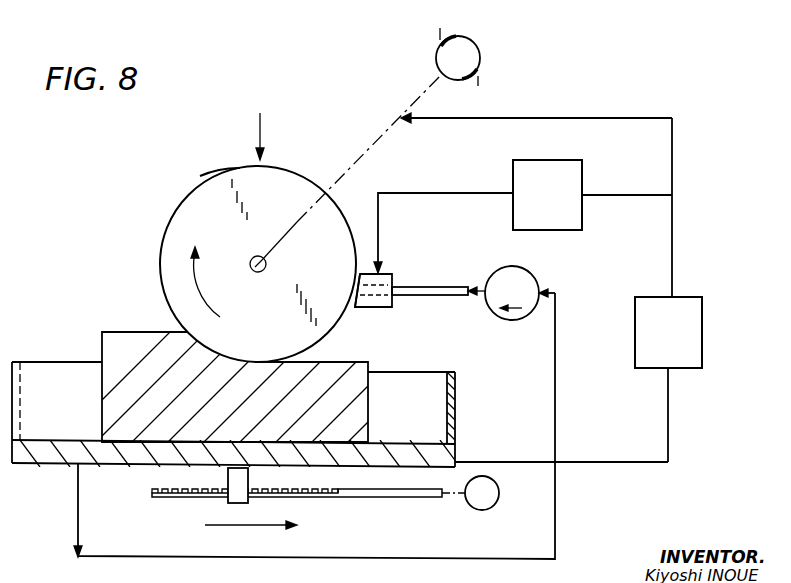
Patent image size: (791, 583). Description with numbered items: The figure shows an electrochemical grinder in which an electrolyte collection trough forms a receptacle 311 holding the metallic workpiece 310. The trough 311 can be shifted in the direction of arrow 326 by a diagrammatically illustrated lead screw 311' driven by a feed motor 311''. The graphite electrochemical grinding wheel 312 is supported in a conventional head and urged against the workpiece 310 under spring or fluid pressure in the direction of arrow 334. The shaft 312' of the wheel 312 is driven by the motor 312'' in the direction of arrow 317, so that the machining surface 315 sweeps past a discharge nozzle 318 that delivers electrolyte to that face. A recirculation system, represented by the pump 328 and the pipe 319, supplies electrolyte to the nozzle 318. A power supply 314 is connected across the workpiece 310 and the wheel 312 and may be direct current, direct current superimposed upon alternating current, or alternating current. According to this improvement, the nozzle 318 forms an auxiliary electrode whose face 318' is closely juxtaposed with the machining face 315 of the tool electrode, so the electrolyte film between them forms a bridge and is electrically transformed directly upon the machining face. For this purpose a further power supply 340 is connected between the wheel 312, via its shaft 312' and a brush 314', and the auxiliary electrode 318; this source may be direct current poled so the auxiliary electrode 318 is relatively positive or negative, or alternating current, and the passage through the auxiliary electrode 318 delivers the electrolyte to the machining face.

The workpiece 310 is at (155, 342).
The receptacle 311 is at (230, 435).
The lead screw 311' is at (297, 499).
The feed motor 311'' is at (479, 511).
The electrochemical grinding wheel 312 is at (244, 264).
The shaft 312' is at (352, 167).
The motor 312'' is at (500, 57).
The power supply 314 is at (611, 290).
The brush 314' is at (536, 131).
The machining surface 315 is at (222, 171).
The arrow 317 is at (190, 272).
The discharge nozzle 318 is at (403, 275).
The face 318' is at (372, 312).
The pipe 319 is at (434, 298).
The arrow 326 is at (249, 527).
The pump 328 is at (532, 275).
The arrow 334 is at (259, 124).
The further power supply 340 is at (565, 168).